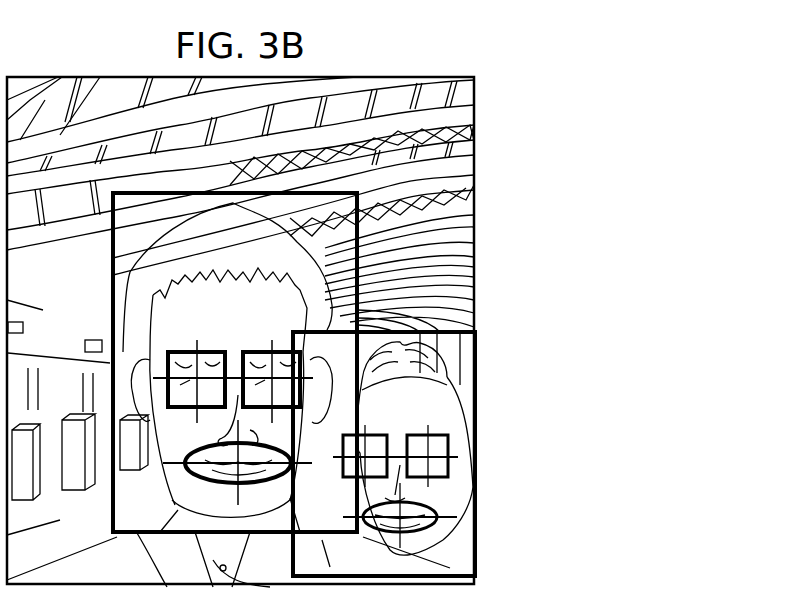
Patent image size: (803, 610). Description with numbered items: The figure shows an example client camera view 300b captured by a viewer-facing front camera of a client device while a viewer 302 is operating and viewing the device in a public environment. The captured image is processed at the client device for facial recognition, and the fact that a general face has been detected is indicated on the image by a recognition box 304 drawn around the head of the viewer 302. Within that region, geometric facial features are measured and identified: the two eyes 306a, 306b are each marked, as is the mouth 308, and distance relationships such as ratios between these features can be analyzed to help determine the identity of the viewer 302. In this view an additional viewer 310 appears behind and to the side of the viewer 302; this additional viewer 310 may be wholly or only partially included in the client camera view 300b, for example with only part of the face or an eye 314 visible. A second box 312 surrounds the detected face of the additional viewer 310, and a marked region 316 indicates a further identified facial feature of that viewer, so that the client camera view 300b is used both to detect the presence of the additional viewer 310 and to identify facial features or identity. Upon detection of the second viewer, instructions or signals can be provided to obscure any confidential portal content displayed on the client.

The client camera view 300b is at (108, 72).
The viewer 302 is at (112, 305).
The recognition box 304 is at (112, 511).
The eye 306a is at (167, 372).
The eye 306b is at (258, 361).
The mouth 308 is at (112, 460).
The additional viewer 310 is at (462, 407).
The second face detection bounding box 312 is at (477, 438).
The eye 314 is at (462, 490).
The second face mouth region 316 is at (457, 535).